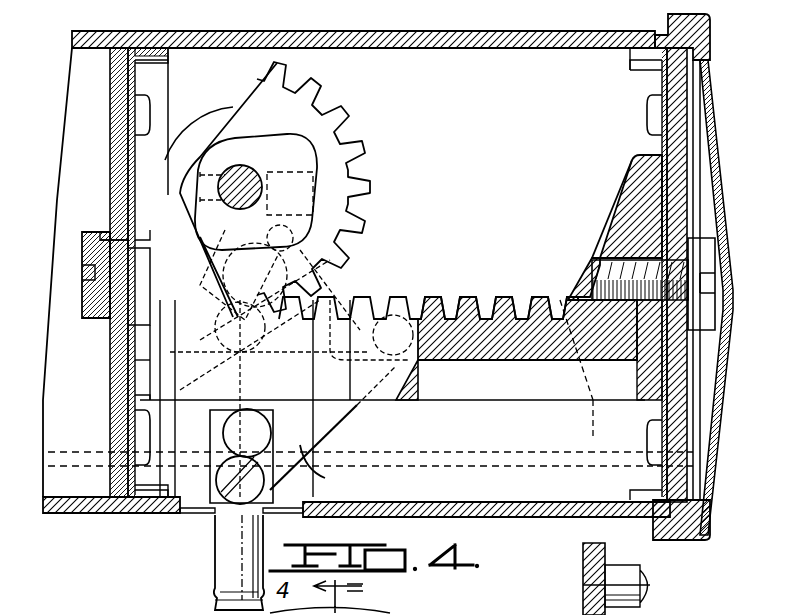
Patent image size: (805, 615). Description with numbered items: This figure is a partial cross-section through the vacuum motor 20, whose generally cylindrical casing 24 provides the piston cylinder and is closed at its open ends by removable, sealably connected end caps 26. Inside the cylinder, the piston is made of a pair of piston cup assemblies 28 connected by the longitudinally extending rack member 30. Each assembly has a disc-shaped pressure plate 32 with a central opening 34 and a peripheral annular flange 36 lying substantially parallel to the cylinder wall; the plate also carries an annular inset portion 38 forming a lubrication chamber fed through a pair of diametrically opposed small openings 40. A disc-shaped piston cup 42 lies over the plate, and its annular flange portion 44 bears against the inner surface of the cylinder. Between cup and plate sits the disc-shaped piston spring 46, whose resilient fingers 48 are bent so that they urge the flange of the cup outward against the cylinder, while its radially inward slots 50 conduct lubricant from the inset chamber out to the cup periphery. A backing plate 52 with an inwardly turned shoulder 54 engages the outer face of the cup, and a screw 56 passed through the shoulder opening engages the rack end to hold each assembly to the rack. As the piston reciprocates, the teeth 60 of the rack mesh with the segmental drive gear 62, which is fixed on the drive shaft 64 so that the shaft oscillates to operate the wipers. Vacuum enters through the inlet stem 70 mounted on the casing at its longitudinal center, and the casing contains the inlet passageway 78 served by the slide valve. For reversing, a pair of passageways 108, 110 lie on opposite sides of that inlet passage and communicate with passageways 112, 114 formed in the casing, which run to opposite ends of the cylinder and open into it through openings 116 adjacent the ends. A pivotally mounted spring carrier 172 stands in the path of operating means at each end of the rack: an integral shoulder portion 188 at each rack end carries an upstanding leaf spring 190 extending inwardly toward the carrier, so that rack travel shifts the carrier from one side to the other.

The housing 20 is at (425, 40).
The casing 24 is at (335, 40).
The end cap 26 is at (728, 345).
The piston cup assembly 28 is at (119, 172).
The rack member 30 is at (437, 402).
The pressure plate 32 is at (165, 160).
The central opening 34 is at (85, 250).
The annular flange 36 is at (162, 70).
The annular inset portion 38 is at (150, 135).
The opening 40 is at (150, 110).
The piston cup 42 is at (130, 132).
The annular flange portion 44 is at (152, 48).
The piston spring 46 is at (128, 213).
The resilient finger 48 is at (172, 55).
The slot 50 is at (647, 108).
The backing plate 52 is at (128, 378).
The shoulder 54 is at (85, 234).
The screw 56 is at (85, 305).
The teeth 60 is at (468, 297).
The segmental drive gear 62 is at (350, 172).
The drive shaft 64 is at (250, 168).
The inlet stem 70 is at (215, 562).
The inlet passageway 78 is at (300, 350).
The passageway 108 is at (112, 434).
The passageway 110 is at (300, 384).
The passageway 112 is at (50, 455).
The passageway 114 is at (392, 445).
The opening 116 is at (700, 464).
The spring carrier 172 is at (312, 475).
The shoulder portion 188 is at (135, 370).
The leaf spring 190 is at (575, 362).